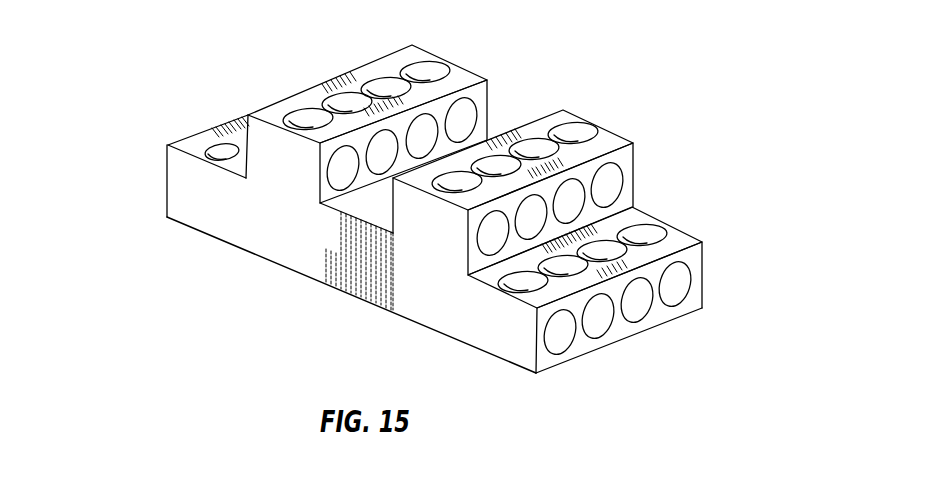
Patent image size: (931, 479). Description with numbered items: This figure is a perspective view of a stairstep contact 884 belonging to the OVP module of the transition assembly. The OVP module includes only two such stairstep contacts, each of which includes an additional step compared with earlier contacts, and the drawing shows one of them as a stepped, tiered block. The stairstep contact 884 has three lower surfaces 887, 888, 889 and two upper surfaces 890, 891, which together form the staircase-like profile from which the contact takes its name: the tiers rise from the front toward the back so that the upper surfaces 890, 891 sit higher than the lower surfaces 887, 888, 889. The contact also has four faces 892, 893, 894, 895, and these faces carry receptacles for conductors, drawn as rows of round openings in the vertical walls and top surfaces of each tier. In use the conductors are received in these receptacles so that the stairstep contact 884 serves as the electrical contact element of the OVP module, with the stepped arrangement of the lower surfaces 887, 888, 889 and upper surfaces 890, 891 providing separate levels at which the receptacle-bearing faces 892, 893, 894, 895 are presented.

The stairstep contact 884 is at (722, 108).
The lower surface 887 is at (674, 243).
The lower surface 888 is at (340, 233).
The lower surface 889 is at (192, 148).
The upper surface 890 is at (607, 138).
The upper surface 891 is at (466, 78).
The face 892 is at (540, 364).
The face 893 is at (468, 275).
The face 894 is at (227, 167).
The face 895 is at (213, 137).